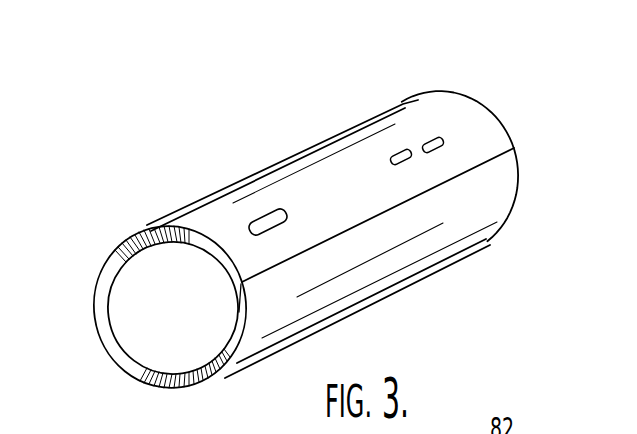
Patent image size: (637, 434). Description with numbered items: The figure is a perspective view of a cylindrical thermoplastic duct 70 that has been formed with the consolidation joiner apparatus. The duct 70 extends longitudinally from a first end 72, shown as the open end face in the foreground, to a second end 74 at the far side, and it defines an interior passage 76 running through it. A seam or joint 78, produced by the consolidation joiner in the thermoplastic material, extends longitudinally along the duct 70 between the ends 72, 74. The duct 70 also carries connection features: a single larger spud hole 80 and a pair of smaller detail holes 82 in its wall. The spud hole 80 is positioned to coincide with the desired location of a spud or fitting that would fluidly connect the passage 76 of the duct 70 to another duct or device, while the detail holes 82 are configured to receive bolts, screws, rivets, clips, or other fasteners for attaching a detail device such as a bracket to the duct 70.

The cylindrical thermoplastic duct 70 is at (208, 100).
The first end 72 is at (100, 260).
The second end 74 is at (487, 103).
The passage 76 is at (163, 312).
The seam or joint 78 is at (391, 209).
The spud hole 80 is at (262, 213).
The detail holes 82 is at (399, 150).